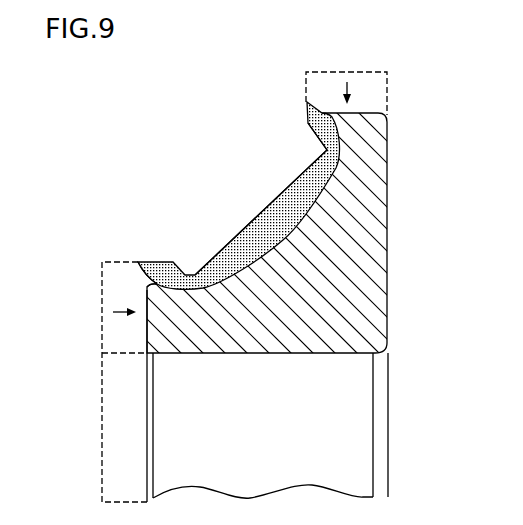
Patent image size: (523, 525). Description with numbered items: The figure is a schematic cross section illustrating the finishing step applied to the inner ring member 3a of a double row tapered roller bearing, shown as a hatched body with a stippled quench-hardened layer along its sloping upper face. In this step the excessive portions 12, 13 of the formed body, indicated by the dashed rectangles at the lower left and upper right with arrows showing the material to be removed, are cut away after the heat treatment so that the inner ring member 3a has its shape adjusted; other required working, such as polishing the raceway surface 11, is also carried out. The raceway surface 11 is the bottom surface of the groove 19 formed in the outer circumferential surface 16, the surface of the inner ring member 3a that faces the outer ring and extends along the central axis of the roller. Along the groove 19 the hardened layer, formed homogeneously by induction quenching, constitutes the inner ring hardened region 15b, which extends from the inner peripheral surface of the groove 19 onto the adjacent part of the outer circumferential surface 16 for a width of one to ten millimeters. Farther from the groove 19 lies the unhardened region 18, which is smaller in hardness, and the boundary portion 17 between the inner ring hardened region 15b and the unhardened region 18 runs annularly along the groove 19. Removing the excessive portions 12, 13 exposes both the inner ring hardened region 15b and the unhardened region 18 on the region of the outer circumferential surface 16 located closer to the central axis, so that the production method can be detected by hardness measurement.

The inner ring member 3a is at (397, 209).
The raceway surface 11 is at (243, 217).
The excessive portion 12 is at (102, 292).
The excessive portion 13 is at (325, 92).
The inner ring hardened region 15b is at (222, 251).
The outer circumferential surface 16 is at (157, 281).
The boundary portion 17 is at (158, 286).
The unhardened region 18 is at (148, 305).
The groove 19 is at (317, 137).